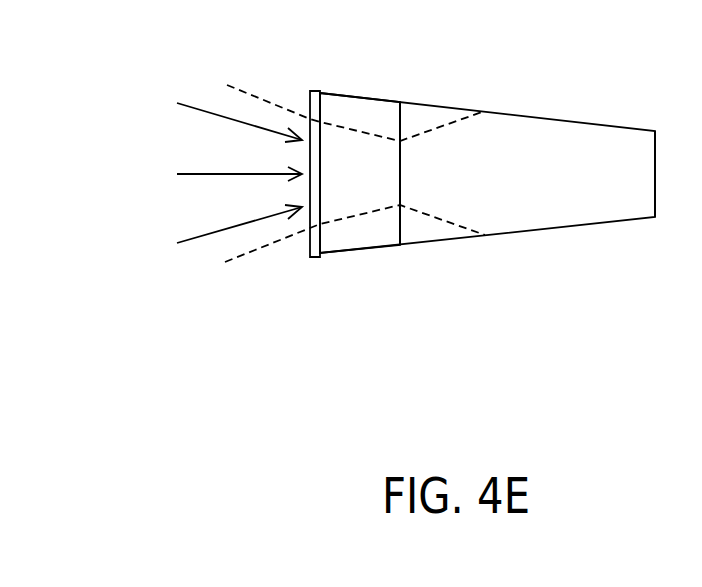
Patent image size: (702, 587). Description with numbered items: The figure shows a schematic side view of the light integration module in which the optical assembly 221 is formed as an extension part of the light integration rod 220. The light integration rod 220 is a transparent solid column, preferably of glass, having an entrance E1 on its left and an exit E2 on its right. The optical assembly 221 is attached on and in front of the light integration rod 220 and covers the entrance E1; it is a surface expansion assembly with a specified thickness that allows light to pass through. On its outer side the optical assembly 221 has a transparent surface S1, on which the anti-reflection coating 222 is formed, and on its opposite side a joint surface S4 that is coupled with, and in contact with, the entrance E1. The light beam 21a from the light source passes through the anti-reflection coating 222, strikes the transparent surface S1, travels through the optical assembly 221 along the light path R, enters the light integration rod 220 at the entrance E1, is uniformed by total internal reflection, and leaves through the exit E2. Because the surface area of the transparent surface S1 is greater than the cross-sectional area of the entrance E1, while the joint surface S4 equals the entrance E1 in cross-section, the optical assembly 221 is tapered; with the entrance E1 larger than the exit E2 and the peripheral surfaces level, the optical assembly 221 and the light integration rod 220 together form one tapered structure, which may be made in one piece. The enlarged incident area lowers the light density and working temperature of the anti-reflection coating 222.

The light integration rod 220 is at (597, 172).
The optical assembly 221 is at (365, 115).
The anti-reflection coating 222 is at (315, 110).
The light beam 21a is at (217, 173).
The light path R is at (352, 155).
The entrance E1 is at (403, 197).
The exit E2 is at (657, 182).
The transparent surface S1 is at (325, 233).
The joint surface S4 is at (400, 208).